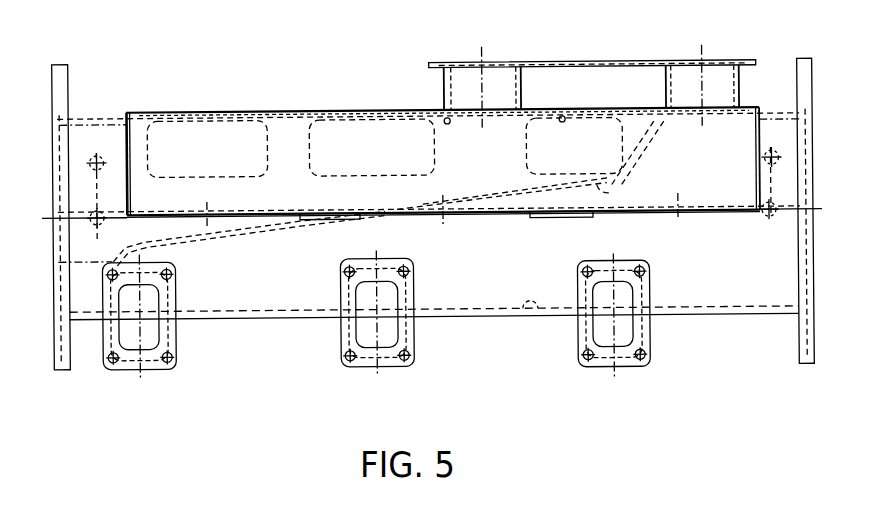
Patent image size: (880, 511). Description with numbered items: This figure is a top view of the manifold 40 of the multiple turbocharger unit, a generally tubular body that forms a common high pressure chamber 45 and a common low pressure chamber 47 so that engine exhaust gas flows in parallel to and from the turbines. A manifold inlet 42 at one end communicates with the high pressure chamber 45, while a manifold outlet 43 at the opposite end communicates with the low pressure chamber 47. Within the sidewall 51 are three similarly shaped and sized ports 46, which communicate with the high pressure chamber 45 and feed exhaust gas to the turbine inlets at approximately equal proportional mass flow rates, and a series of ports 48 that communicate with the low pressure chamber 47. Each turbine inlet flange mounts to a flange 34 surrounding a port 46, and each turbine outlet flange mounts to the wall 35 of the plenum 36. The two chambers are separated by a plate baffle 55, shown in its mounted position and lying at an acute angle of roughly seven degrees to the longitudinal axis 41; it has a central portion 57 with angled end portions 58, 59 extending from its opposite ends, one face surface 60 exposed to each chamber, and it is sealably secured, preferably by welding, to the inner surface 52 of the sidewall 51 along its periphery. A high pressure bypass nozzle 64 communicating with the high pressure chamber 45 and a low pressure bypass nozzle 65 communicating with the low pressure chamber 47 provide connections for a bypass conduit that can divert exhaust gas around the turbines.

The flange 34 is at (152, 365).
The wall 35 is at (650, 215).
The plenum 36 is at (283, 147).
The manifold 40 is at (227, 322).
The longitudinal axis 41 is at (47, 214).
The manifold inlet 42 is at (813, 135).
The manifold outlet 43 is at (53, 144).
The high pressure chamber 45 is at (492, 271).
The ports 46 is at (150, 296).
The low pressure chamber 47 is at (500, 173).
The ports 48 is at (179, 128).
The sidewall 51 is at (485, 322).
The inner surface 52 is at (533, 322).
The baffle 55 is at (284, 222).
The central portion 57 is at (222, 241).
The end portion 58 is at (636, 160).
The end portion 59 is at (58, 259).
The face surface 60 is at (150, 244).
The high pressure bypass nozzle 64 is at (723, 84).
The low pressure bypass nozzle 65 is at (445, 85).